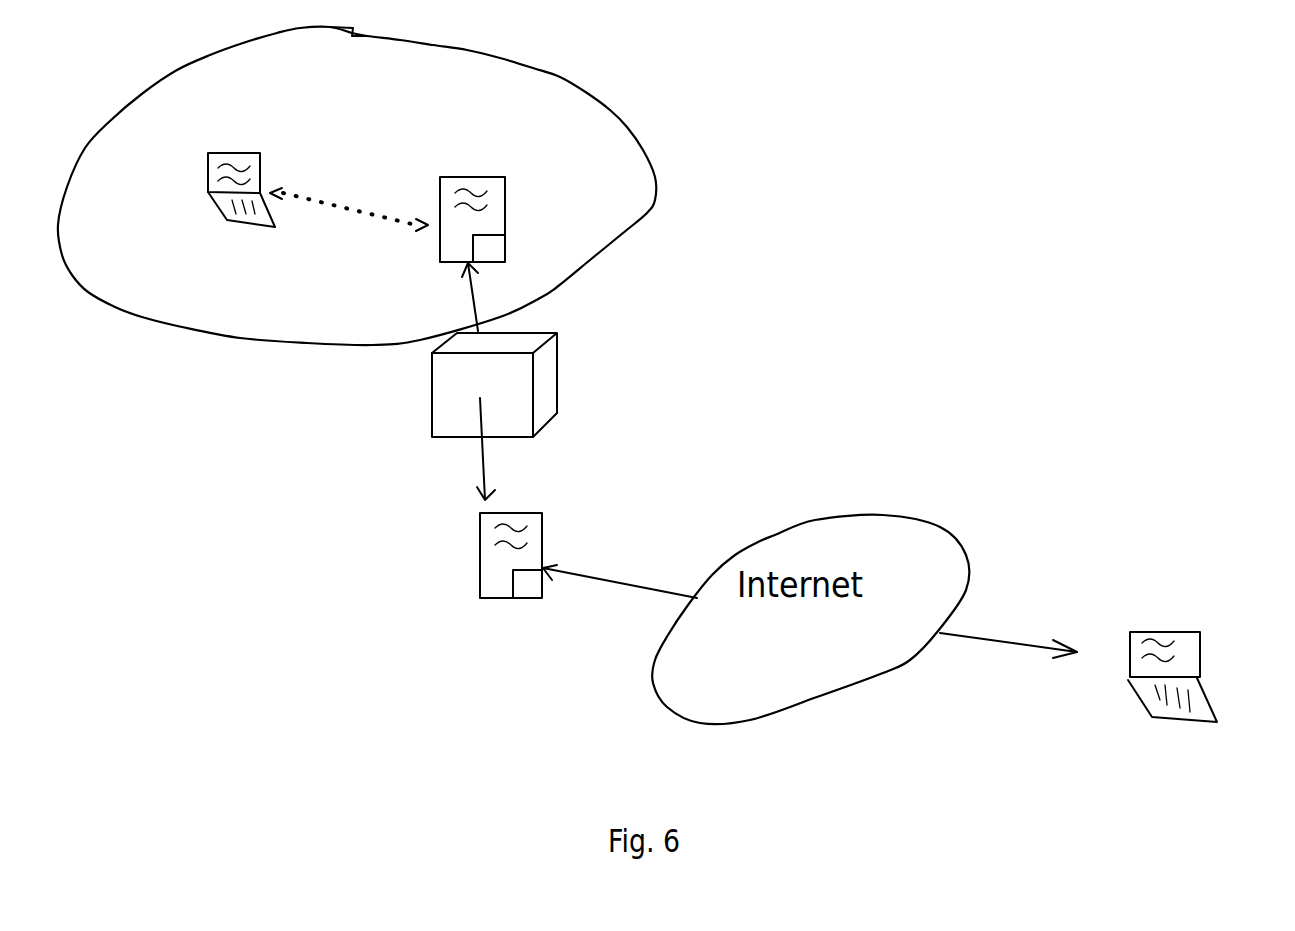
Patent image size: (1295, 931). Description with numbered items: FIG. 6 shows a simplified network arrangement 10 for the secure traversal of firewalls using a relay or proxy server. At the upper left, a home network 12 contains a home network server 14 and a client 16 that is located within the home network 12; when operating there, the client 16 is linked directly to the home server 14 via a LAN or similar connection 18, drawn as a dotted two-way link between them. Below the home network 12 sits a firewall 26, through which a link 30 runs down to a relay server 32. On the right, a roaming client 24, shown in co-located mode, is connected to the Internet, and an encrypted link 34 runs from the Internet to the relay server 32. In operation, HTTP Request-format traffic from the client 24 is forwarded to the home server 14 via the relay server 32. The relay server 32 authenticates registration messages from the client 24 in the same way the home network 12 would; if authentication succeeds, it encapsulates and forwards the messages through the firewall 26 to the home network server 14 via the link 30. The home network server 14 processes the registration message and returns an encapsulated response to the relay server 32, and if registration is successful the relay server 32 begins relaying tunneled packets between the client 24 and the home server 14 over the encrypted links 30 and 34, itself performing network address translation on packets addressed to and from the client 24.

The network arrangement 10 is at (963, 172).
The home network 12 is at (563, 77).
The home network server 14 is at (480, 180).
The client 16 is at (224, 147).
The LAN or similar connection 18 is at (320, 200).
The client 24 is at (1203, 645).
The firewall 26 is at (430, 393).
The link 30 is at (480, 465).
The relay server 32 is at (537, 512).
The encrypted link 34 is at (595, 588).